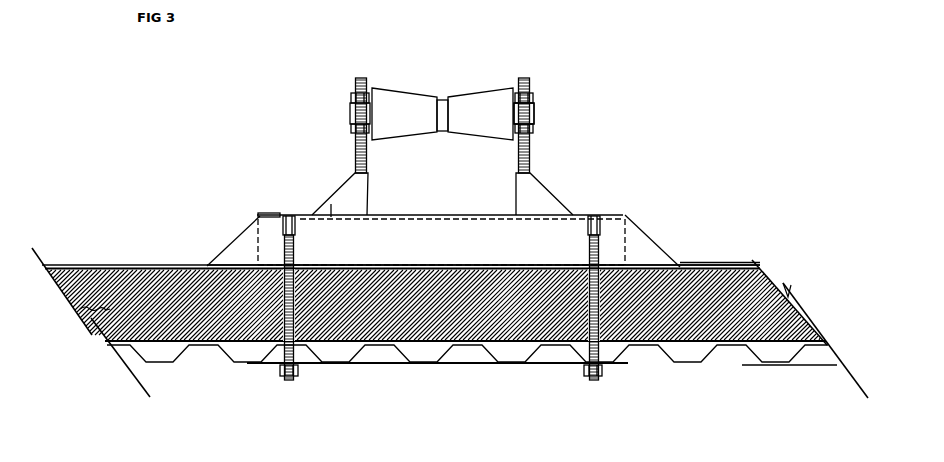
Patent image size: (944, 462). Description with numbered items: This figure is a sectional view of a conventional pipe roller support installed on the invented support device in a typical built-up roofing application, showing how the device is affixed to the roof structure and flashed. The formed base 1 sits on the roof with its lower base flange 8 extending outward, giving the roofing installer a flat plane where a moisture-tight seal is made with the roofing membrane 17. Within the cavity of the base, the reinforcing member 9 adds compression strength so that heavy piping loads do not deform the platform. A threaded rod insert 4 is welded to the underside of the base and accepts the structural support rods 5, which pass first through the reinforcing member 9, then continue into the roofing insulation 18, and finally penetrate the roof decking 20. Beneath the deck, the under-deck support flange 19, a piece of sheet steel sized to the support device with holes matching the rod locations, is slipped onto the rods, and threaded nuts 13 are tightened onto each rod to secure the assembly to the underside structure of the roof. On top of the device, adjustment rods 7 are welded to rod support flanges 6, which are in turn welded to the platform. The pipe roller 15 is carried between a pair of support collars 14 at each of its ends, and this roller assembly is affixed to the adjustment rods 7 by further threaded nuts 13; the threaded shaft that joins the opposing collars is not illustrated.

The formed base 1 is at (328, 212).
The threaded rod insert 4 is at (280, 222).
The structural support rods 5 is at (280, 253).
The rod support flanges 6 is at (527, 197).
The adjustment rods 7 is at (353, 160).
The lower base flange 8 is at (686, 267).
The reinforcing member 9 is at (613, 248).
The threaded nuts 13 is at (347, 127).
The support collars 14 is at (520, 113).
The pipe roller 15 is at (485, 88).
The roofing membrane 17 is at (700, 268).
The roofing insulation 18 is at (137, 300).
The under-deck support flange 19 is at (525, 365).
The roof decking 20 is at (680, 363).